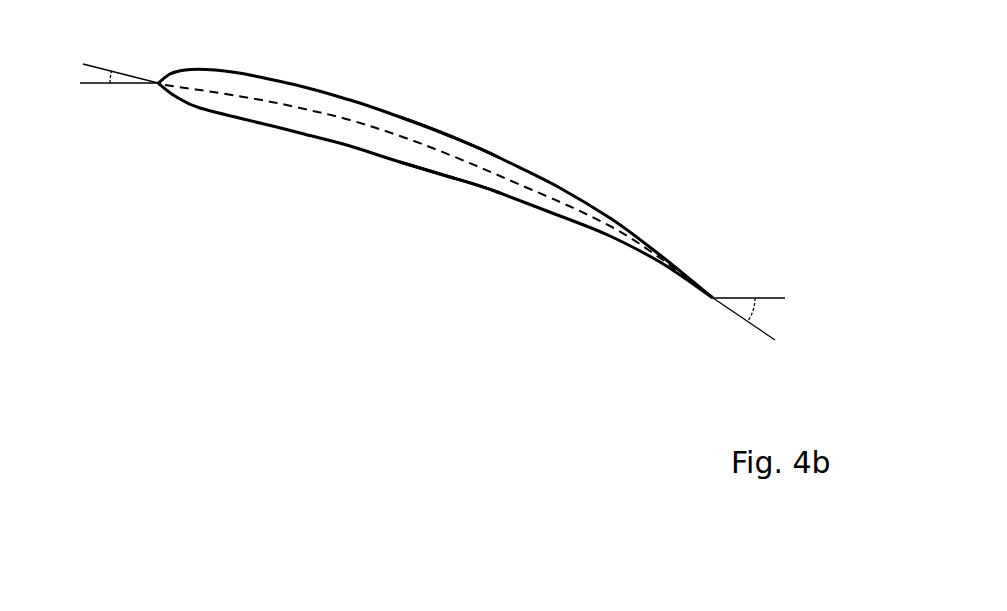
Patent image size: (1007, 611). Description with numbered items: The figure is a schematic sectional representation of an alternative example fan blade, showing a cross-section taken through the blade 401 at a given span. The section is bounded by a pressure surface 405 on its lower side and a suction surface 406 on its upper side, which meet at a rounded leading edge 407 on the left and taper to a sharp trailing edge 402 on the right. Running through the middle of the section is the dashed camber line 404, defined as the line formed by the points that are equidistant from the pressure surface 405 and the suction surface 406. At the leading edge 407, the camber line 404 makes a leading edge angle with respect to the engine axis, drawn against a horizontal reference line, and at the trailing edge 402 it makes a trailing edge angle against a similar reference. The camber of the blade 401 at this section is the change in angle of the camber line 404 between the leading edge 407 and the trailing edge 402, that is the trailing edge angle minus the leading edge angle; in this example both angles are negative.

The blade 401 is at (556, 116).
The trailing edge 402 is at (710, 304).
The camber line 404 is at (310, 110).
The pressure surface 405 is at (478, 187).
The suction surface 406 is at (454, 131).
The leading edge 407 is at (155, 88).